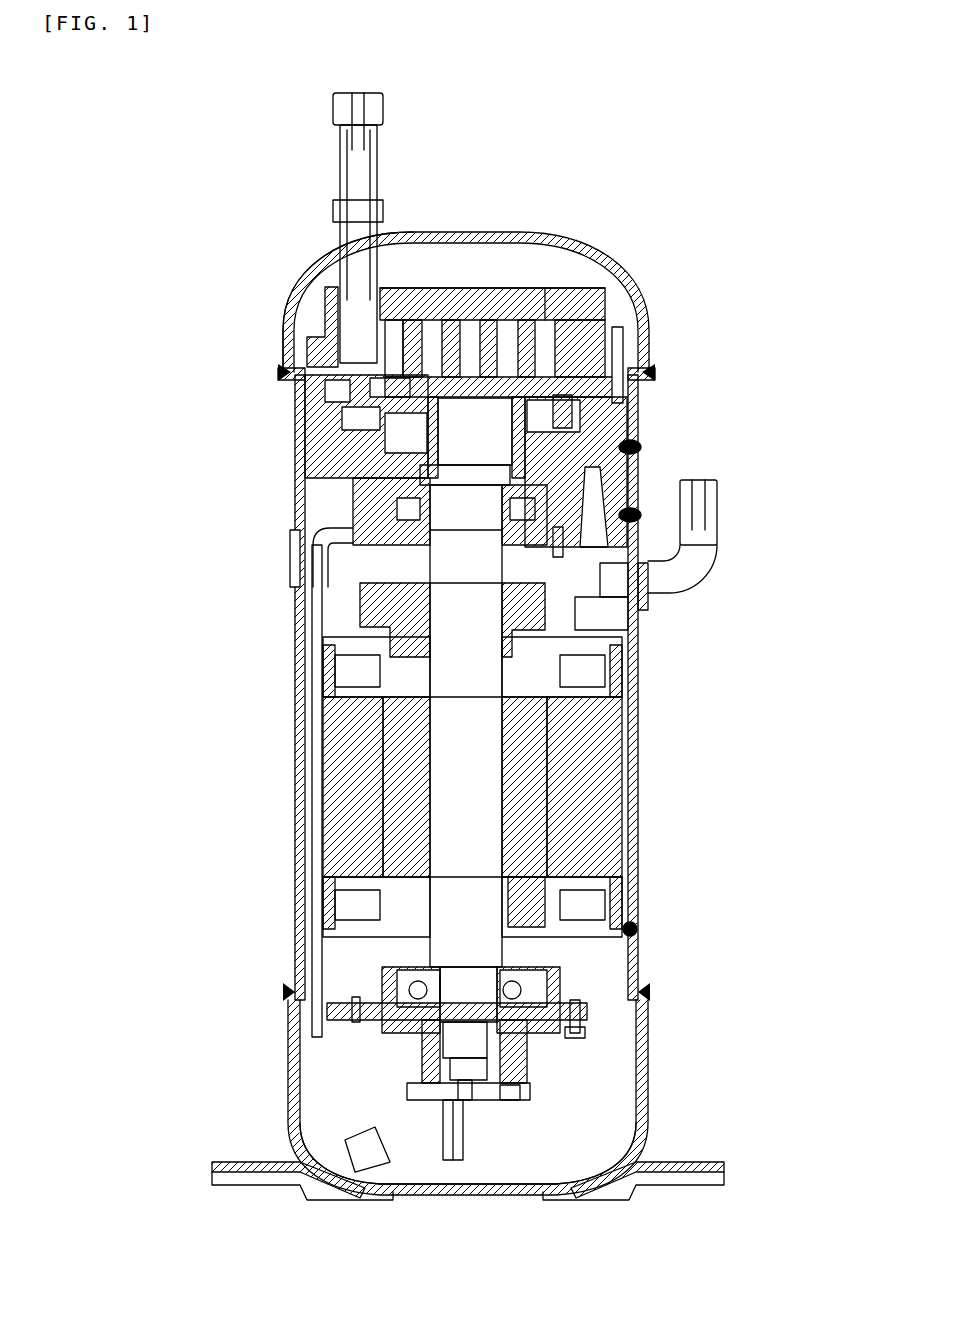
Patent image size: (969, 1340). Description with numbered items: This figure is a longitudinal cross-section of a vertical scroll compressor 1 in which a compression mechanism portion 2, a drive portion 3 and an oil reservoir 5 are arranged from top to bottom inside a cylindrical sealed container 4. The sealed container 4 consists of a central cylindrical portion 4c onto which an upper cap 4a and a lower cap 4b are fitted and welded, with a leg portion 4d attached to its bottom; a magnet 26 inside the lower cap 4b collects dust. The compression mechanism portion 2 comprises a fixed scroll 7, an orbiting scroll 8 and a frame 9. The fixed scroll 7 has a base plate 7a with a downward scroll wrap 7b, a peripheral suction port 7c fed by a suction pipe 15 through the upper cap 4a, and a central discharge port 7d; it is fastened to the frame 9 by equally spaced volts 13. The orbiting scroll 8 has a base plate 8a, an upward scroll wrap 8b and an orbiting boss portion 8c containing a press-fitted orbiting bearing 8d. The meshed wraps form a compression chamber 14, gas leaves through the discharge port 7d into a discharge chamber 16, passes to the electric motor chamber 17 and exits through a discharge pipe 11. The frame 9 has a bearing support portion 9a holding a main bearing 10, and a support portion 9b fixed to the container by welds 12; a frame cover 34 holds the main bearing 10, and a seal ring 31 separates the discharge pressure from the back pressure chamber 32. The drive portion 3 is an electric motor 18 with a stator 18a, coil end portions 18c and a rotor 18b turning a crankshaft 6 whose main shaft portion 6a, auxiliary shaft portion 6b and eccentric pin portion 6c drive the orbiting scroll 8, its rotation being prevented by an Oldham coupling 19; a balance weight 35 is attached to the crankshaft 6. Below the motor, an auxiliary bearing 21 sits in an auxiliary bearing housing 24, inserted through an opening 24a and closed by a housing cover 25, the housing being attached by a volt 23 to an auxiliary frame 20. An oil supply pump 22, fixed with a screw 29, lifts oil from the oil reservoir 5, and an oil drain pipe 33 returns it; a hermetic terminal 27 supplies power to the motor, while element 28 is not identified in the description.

The scroll compressor 1 is at (691, 184).
The compression mechanism portion 2 is at (597, 276).
The drive portion 3 is at (626, 778).
The sealed container 4 is at (636, 720).
The upper cap 4a is at (318, 268).
The lower cap 4b is at (643, 1082).
The central cylindrical portion 4c is at (641, 682).
The leg portion 4d is at (645, 1157).
The oil reservoir 5 is at (488, 1165).
The crankshaft 6 is at (455, 665).
The main shaft portion 6a is at (490, 553).
The auxiliary shaft portion 6b is at (455, 960).
The eccentric pin portion 6c is at (475, 405).
The fixed scroll 7 is at (530, 310).
The base plate 7a is at (592, 305).
The scroll wrap 7b is at (575, 300).
The suction port 7c is at (413, 345).
The discharge port 7d is at (487, 295).
The orbiting scroll 8 is at (483, 355).
The base plate 8a is at (430, 385).
The scroll wrap 8b is at (345, 330).
The orbiting boss portion 8c is at (400, 447).
The orbiting bearing 8d is at (400, 425).
The frame 9 is at (600, 425).
The bearing support portion 9a is at (375, 505).
The support portion 9b is at (622, 437).
The main bearing 10 is at (580, 523).
The discharge pipe 11 is at (720, 488).
The welds 12 is at (645, 514).
The volt (bolt) 13 is at (620, 330).
The compression chamber 14 is at (422, 330).
The suction pipe 15 is at (335, 210).
The discharge chamber 16 is at (445, 255).
The electric motor chamber 17 is at (575, 612).
The electric motor 18 is at (760, 797).
The stator 18a is at (600, 808).
The rotor 18b is at (525, 850).
The coil end portion 18c is at (330, 672).
The Oldham coupling 19 is at (590, 395).
The auxiliary frame 20 is at (648, 940).
The auxiliary bearing 21 is at (415, 992).
The oil supply pump 22 is at (440, 1120).
The volt (bolt) 23 is at (583, 1027).
The auxiliary bearing housing 24 is at (540, 987).
The opening 24a is at (530, 963).
The housing cover 25 is at (415, 967).
The magnet 26 is at (355, 1147).
The hermetic terminal 27 is at (290, 560).
The bearing hub 28 is at (430, 1030).
The screw 29 is at (515, 1090).
The seal ring 31 is at (430, 478).
The back pressure chamber 32 is at (430, 440).
The oil drain pipe 33 is at (315, 750).
The frame cover 34 is at (350, 573).
The balance weight 35 is at (378, 607).